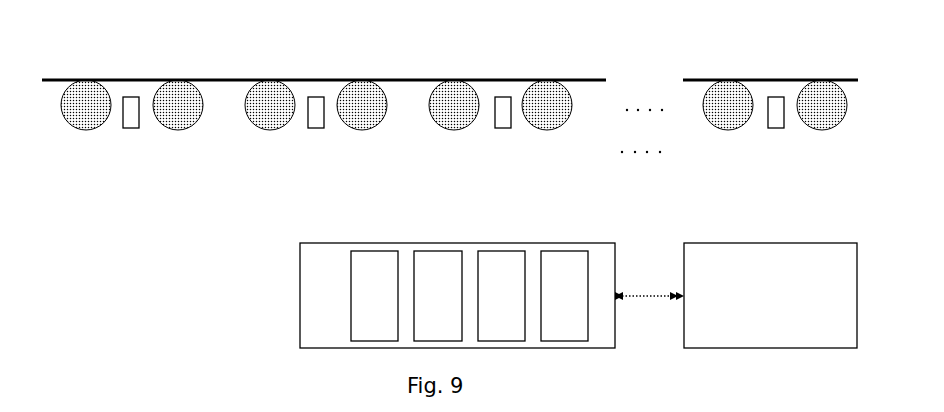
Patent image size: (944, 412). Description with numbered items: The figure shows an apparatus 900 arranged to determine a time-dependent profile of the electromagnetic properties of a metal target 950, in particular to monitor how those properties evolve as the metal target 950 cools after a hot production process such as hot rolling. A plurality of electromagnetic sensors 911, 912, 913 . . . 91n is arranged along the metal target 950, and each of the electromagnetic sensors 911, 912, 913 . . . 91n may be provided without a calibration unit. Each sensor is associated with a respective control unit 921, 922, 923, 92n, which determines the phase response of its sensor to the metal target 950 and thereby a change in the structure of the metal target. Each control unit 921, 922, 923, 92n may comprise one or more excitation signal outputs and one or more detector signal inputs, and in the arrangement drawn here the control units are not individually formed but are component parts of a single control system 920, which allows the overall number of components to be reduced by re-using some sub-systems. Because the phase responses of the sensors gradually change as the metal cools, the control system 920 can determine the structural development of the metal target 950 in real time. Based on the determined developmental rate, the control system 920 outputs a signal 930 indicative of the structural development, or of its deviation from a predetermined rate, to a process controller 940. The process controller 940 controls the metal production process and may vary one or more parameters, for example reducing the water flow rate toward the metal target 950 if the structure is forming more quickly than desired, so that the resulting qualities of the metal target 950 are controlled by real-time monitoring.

The apparatus 900 is at (450, 182).
The metal target 950 is at (301, 77).
The electromagnetic sensor 911 is at (373, 242).
The electromagnetic sensor 912 is at (436, 242).
The electromagnetic sensor 913 is at (497, 242).
The electromagnetic sensor 91n is at (562, 242).
The control system 920 is at (457, 295).
The control unit 921 is at (374, 296).
The control unit 922 is at (438, 296).
The control unit 923 is at (501, 296).
The control unit 92n is at (564, 296).
The signal 930 is at (649, 286).
The process controller 940 is at (770, 295).